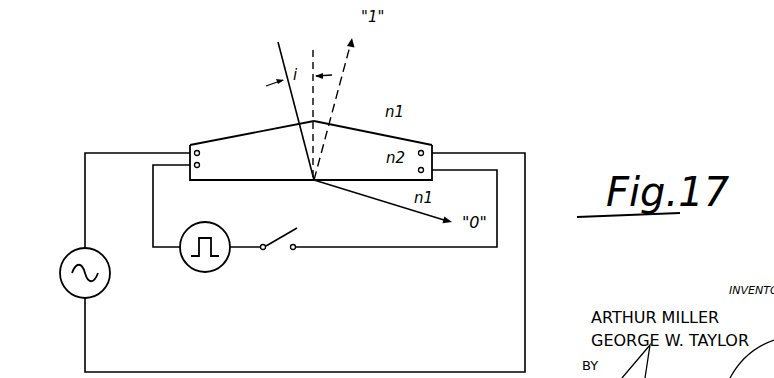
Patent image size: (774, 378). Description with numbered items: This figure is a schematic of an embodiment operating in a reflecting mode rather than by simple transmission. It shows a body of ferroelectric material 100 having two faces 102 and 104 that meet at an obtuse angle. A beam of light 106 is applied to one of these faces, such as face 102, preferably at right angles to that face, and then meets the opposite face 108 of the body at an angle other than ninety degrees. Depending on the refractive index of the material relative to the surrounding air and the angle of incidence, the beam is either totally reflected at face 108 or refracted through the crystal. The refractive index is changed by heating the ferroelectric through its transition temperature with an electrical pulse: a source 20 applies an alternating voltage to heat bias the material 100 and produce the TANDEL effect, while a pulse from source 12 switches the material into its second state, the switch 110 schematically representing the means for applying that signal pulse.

The body of ferroelectric material 100 is at (255, 162).
The face 102 is at (227, 138).
The face 104 is at (415, 142).
The beam of light 106 is at (282, 54).
The opposite face 108 is at (296, 182).
The switch 110 is at (279, 258).
The source 12 is at (193, 272).
The source 20 is at (66, 291).